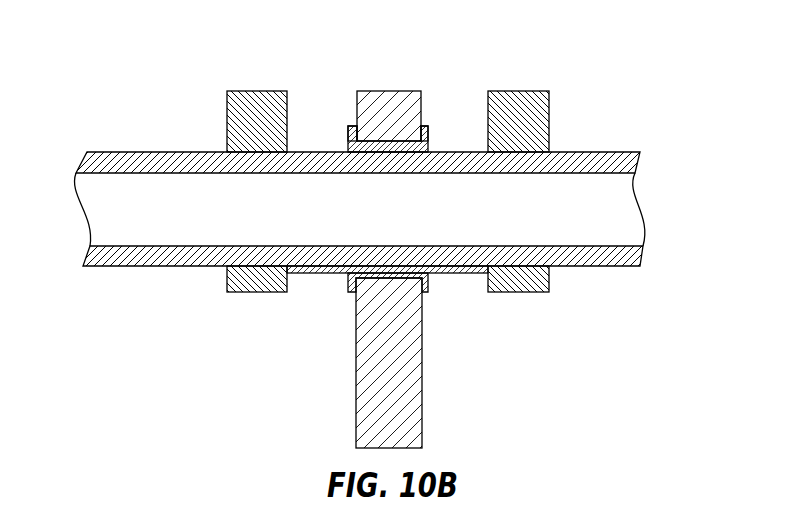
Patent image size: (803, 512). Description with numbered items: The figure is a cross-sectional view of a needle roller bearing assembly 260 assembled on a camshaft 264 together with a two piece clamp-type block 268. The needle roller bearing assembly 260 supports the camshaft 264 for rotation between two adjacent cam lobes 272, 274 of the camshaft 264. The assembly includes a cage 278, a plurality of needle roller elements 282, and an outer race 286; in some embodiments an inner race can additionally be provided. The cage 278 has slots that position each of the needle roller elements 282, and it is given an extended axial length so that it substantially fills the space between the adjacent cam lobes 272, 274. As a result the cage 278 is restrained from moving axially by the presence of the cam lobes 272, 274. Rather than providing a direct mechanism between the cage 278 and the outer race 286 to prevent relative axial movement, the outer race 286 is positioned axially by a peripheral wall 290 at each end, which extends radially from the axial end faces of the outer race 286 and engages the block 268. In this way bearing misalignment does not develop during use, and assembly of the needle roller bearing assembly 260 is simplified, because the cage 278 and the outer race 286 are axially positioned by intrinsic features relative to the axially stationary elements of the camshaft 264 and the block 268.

The needle roller bearing assembly 260 is at (341, 304).
The camshaft 264 is at (122, 122).
The two piece clamp-type block 268 is at (378, 95).
The cam lobe 272 is at (253, 96).
The cam lobe 274 is at (541, 100).
The cage 278 is at (468, 273).
The needle roller element 282 is at (404, 148).
The outer race 286 is at (402, 282).
The peripheral wall 290 is at (352, 138).